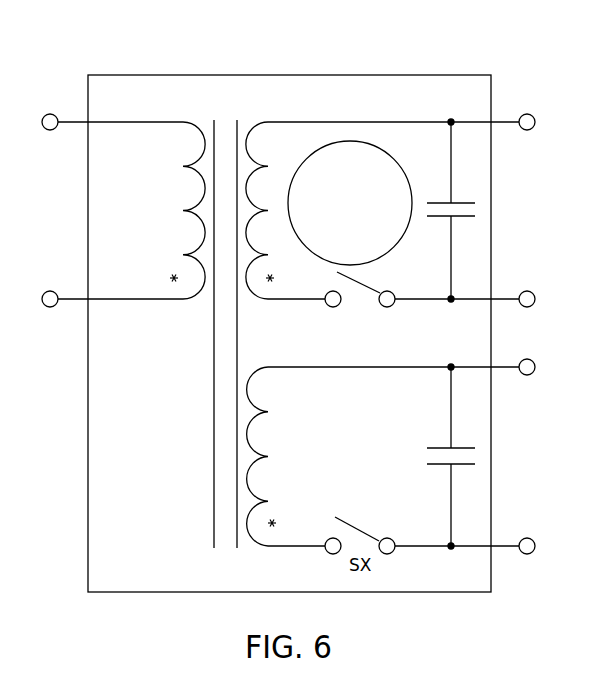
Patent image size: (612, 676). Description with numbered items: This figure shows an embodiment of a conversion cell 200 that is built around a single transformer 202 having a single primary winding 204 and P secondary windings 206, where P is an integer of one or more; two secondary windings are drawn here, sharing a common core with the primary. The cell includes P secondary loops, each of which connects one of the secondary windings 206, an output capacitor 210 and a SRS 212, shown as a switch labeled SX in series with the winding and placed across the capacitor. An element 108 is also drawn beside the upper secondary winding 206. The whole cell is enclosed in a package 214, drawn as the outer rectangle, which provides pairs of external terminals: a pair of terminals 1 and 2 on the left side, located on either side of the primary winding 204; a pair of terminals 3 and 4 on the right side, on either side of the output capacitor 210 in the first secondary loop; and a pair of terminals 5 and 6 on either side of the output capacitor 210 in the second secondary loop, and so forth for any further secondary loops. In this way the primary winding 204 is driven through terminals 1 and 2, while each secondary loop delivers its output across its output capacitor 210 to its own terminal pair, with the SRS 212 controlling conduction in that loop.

The conversion cell 200 is at (116, 36).
The package 214 is at (290, 74).
The primary winding 204 is at (167, 121).
The secondary windings 206 is at (281, 120).
The transformer 202 is at (278, 367).
The load (motor) 108 is at (385, 152).
The output capacitor 210 is at (463, 199).
The SRS 212 is at (366, 285).
The terminal 1 is at (112, 285).
The terminal 2 is at (112, 136).
The terminal 3 is at (493, 136).
The terminal 4 is at (465, 285).
The terminal 5 is at (493, 381).
The terminal 6 is at (465, 532).